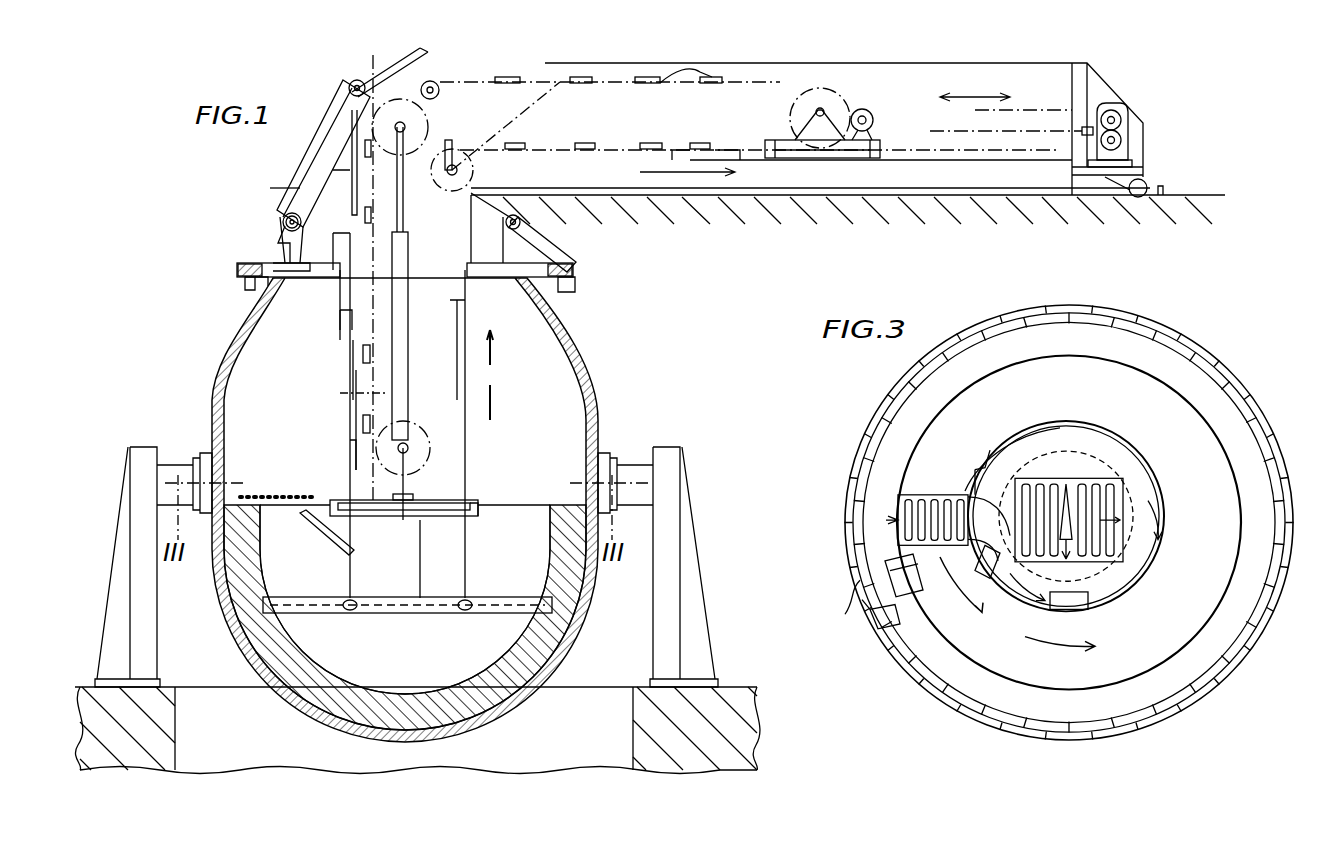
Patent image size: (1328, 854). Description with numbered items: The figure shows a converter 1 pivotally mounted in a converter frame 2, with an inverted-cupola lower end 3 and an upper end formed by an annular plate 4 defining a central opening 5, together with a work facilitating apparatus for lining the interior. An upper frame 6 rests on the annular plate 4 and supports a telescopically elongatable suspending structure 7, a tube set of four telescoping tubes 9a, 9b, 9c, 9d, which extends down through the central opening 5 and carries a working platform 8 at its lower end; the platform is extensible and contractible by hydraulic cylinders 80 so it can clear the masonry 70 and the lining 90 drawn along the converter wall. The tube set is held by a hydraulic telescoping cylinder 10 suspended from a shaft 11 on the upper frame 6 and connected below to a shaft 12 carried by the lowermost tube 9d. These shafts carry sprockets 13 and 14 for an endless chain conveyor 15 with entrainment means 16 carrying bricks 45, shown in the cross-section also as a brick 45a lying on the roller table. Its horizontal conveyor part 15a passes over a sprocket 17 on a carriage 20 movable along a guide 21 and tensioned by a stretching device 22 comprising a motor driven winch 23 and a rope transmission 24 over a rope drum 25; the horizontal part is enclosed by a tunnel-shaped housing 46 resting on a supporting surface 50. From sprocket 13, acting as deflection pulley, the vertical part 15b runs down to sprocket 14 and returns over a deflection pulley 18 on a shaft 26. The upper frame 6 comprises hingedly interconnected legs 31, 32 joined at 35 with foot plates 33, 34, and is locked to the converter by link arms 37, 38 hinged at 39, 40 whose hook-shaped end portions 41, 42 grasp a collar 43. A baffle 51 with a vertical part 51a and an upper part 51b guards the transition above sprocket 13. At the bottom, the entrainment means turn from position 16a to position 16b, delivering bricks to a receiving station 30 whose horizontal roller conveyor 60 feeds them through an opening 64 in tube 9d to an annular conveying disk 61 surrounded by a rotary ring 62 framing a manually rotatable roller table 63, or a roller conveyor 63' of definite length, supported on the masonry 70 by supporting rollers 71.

In FIG. 1, the converter 1 is at (605, 420).
In FIG. 3, the converter 1 is at (1205, 323).
In FIG. 1, the converter frame 2 is at (696, 548).
In FIG. 1, the lower end 3 is at (540, 693).
In FIG. 1, the annular plate 4 is at (304, 282).
In FIG. 1, the central opening 5 is at (462, 278).
In FIG. 1, the upper frame 6 is at (347, 103).
In FIG. 1, the suspending structure 7 is at (470, 358).
In FIG. 1, the working platform 8 is at (322, 597).
In FIG. 3, the working platform 8 is at (1080, 405).
In FIG. 1, the telescoping tube 9a is at (284, 222).
In FIG. 1, the telescoping tube 9b is at (338, 318).
In FIG. 1, the telescoping tube 9c is at (346, 360).
In FIG. 1, the lowermost tube 9d is at (346, 457).
In FIG. 1, the hydraulic telescoping cylinder 10 is at (440, 370).
In FIG. 1, the shaft 11 is at (410, 118).
In FIG. 1, the shaft 12 is at (408, 450).
In FIG. 1, the sprocket 13 is at (438, 72).
In FIG. 1, the sprocket 14 is at (425, 470).
In FIG. 1, the endless conveyor 15 is at (750, 74).
In FIG. 1, the horizontal conveyor part 15a is at (722, 86).
In FIG. 1, the vertical part 15b is at (340, 393).
In FIG. 1, the entrainment means 16 is at (360, 298).
In FIG. 1, the position of entrainment means 16a is at (355, 436).
In FIG. 1, the position of entrainment means 16b is at (438, 504).
In FIG. 1, the sprocket 17 is at (818, 90).
In FIG. 1, the deflection pulley 18 is at (505, 150).
In FIG. 1, the carriage 20 is at (840, 150).
In FIG. 1, the guide 21 is at (950, 162).
In FIG. 1, the stretching device 22 is at (910, 92).
In FIG. 1, the motor driven winch 23 is at (1128, 114).
In FIG. 1, the rope transmission 24 is at (1043, 108).
In FIG. 1, the rope drum 25 is at (866, 116).
In FIG. 1, the shaft 26 is at (458, 160).
In FIG. 1, the receiving station 30 is at (347, 492).
In FIG. 3, the receiving station 30 is at (1036, 437).
In FIG. 1, the frame leg 31 is at (300, 188).
In FIG. 1, the frame leg 32 is at (500, 200).
In FIG. 1, the foot plate 33 is at (280, 240).
In FIG. 1, the foot plate 34 is at (580, 250).
In FIG. 1, the hinge 35 is at (348, 80).
In FIG. 1, the link arm 37 is at (237, 270).
In FIG. 1, the link arm 38 is at (573, 272).
In FIG. 1, the hinge connection 39 is at (283, 215).
In FIG. 1, the hinge connection 40 is at (522, 226).
In FIG. 1, the hook-shaped end portion 41 is at (258, 286).
In FIG. 1, the hook-shaped end portion 42 is at (565, 290).
In FIG. 1, the collar 43 is at (246, 284).
In FIG. 1, the bricks 45 is at (392, 494).
In FIG. 3, the bricks 45 is at (1040, 568).
In FIG. 3, the nozzle pipe 45a is at (865, 598).
In FIG. 1, the tunnel-shaped housing 46 is at (792, 50).
In FIG. 1, the supporting surface 50 is at (945, 200).
In FIG. 1, the baffle 51 is at (350, 147).
In FIG. 1, the vertical part 51a is at (333, 167).
In FIG. 1, the upper part 51b is at (402, 60).
In FIG. 3, the horizontal conveyor 60 is at (978, 465).
In FIG. 1, the annular conveying disk 61 is at (388, 512).
In FIG. 3, the annular conveying disk 61 is at (1100, 446).
In FIG. 1, the rotary ring 62 is at (480, 512).
In FIG. 3, the rotary ring 62 is at (1142, 450).
In FIG. 3, the roller table 63 is at (927, 505).
In FIG. 1, the roller conveyor 63' is at (311, 532).
In FIG. 3, the opening 64 is at (1130, 488).
In FIG. 1, the masonry 70 is at (247, 556).
In FIG. 3, the masonry 70 is at (902, 689).
In FIG. 3, the supporting roller 71 is at (910, 583).
In FIG. 1, the hydraulic cylinders 80 is at (350, 612).
In FIG. 1, the refractory lining 90 is at (425, 698).